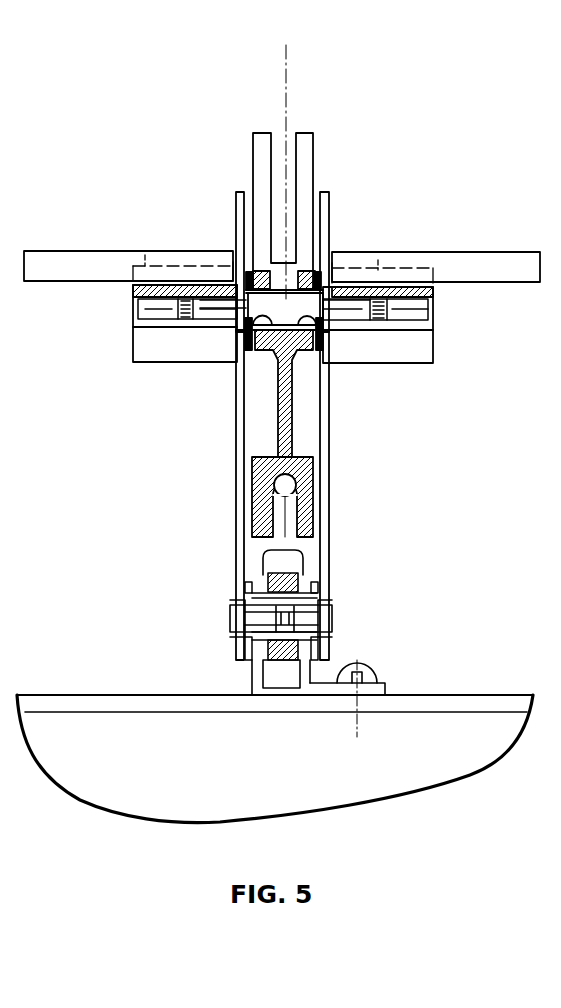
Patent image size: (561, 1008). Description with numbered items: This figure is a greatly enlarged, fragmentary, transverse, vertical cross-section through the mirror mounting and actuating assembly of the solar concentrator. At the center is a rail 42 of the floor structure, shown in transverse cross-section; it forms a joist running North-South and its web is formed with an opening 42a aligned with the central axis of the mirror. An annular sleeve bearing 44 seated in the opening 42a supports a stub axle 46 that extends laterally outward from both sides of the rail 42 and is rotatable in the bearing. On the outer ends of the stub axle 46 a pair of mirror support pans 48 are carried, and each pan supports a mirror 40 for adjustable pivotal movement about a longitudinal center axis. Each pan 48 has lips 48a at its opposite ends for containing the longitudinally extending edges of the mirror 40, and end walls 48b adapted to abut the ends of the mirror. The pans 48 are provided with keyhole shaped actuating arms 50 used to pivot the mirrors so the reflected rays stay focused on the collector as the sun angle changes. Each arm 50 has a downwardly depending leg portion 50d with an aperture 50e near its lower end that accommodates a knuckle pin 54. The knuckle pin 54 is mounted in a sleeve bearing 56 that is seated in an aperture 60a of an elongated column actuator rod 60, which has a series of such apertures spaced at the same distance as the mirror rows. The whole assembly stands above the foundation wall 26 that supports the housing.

The foundation wall 26 is at (435, 784).
The mirror 40 is at (192, 212).
The rail 42 is at (292, 405).
The opening 42a is at (253, 325).
The annular sleeve bearing 44 is at (316, 326).
The stub axle 46 is at (150, 302).
The mirror support pan 48 is at (130, 340).
The lip 48a is at (145, 262).
The end wall 48b is at (233, 271).
The keyhole shaped actuating arm 50 is at (246, 190).
The downwardly depending leg portion 50d is at (236, 452).
The aperture 50e is at (246, 621).
The knuckle pin 54 is at (252, 620).
The sleeve bearing 56 is at (270, 634).
The column actuator rod 60 is at (288, 652).
The aperture 60a is at (322, 626).